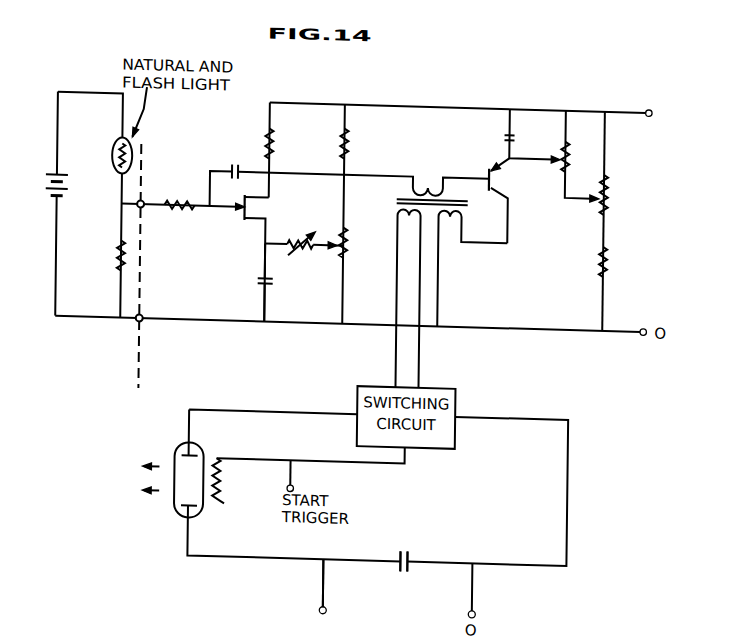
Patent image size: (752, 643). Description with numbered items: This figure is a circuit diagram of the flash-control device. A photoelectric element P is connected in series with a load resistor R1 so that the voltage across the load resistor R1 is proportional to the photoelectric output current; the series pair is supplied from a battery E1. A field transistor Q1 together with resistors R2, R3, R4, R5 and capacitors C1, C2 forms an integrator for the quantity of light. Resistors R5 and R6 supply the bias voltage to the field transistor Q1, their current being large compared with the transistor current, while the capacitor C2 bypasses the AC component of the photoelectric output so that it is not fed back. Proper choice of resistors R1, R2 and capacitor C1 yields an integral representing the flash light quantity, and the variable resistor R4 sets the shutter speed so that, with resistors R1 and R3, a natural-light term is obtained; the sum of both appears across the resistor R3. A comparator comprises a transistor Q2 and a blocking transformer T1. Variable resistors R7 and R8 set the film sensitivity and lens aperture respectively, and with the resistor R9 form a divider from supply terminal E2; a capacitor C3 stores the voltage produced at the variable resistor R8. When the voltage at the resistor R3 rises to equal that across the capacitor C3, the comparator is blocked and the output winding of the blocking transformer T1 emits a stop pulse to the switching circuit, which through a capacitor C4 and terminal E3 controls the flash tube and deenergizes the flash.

The photoelectric element P is at (110, 155).
The battery E1 is at (46, 189).
The load resistor R1 is at (105, 254).
The resistor R2 is at (179, 219).
The capacitor C1 is at (236, 161).
The field transistor Q1 is at (241, 219).
The capacitor C2 is at (251, 282).
The resistor R3 is at (281, 143).
The resistor R6 is at (354, 145).
The variable resistor R4 is at (312, 254).
The resistor R5 is at (354, 246).
The blocking transformer T1 is at (424, 283).
The transistor Q2 is at (514, 201).
The capacitor C3 is at (496, 142).
The variable resistor R8 is at (570, 156).
The variable resistor R7 is at (609, 196).
The resistor R9 is at (613, 262).
The voltage terminal E2 is at (660, 113).
The voltage terminal E3 is at (322, 598).
The capacitor C4 is at (406, 573).